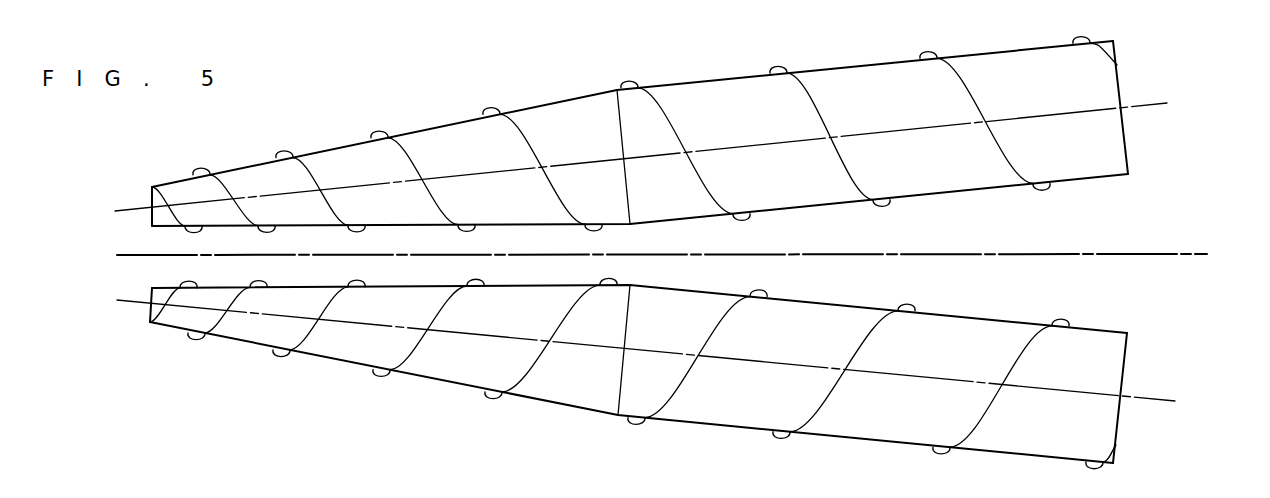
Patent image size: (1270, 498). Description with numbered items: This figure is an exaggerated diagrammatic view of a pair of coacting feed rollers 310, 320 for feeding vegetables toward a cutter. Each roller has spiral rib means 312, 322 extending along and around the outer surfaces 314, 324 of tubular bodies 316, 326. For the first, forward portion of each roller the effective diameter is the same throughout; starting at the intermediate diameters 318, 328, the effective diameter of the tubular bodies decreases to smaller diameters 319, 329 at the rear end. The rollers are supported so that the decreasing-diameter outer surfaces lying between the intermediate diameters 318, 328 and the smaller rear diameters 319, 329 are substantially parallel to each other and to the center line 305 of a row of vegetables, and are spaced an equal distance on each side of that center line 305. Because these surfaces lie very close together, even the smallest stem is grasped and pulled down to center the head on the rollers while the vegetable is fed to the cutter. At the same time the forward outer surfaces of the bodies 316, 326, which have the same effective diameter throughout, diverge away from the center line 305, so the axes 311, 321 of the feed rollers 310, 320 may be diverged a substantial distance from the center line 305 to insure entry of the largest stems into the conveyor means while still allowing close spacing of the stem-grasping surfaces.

The center line 305 is at (1127, 249).
The feed roller 310 is at (457, 95).
The axis of feed roller 311 is at (150, 192).
The spiral rib means 312 is at (805, 82).
The outer surface 314 is at (955, 175).
The tubular body 316 is at (1122, 80).
The intermediate diameter 318 is at (612, 98).
The smaller diameter 319 is at (148, 190).
The feed roller 320 is at (288, 373).
The axis of feed roller 321 is at (148, 303).
The spiral rib means 322 is at (735, 308).
The outer surface 324 is at (717, 408).
The tubular body 326 is at (1127, 355).
The intermediate diameter 328 is at (618, 396).
The smaller diameter 329 is at (150, 306).